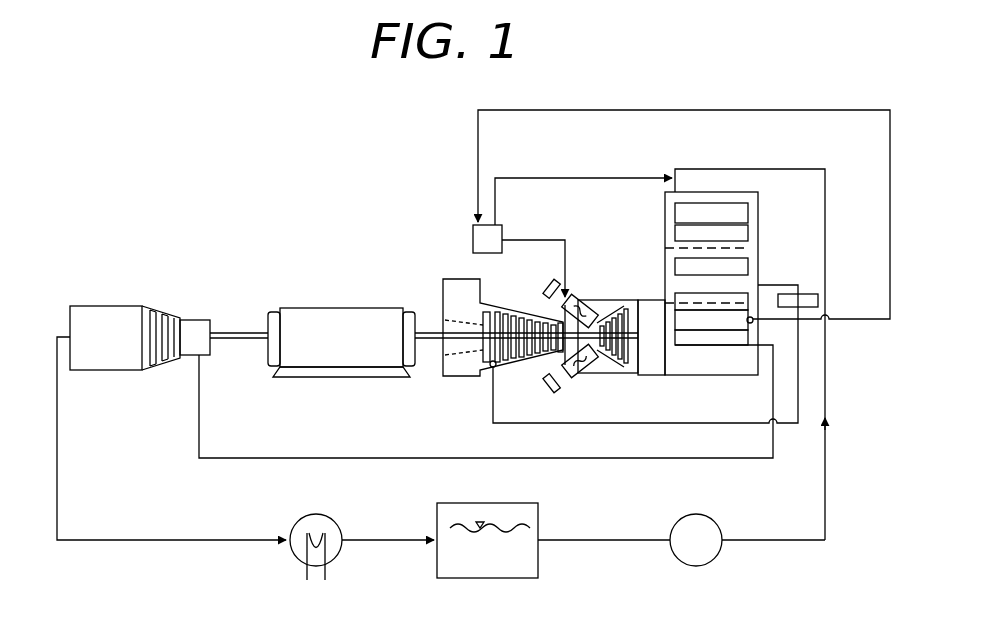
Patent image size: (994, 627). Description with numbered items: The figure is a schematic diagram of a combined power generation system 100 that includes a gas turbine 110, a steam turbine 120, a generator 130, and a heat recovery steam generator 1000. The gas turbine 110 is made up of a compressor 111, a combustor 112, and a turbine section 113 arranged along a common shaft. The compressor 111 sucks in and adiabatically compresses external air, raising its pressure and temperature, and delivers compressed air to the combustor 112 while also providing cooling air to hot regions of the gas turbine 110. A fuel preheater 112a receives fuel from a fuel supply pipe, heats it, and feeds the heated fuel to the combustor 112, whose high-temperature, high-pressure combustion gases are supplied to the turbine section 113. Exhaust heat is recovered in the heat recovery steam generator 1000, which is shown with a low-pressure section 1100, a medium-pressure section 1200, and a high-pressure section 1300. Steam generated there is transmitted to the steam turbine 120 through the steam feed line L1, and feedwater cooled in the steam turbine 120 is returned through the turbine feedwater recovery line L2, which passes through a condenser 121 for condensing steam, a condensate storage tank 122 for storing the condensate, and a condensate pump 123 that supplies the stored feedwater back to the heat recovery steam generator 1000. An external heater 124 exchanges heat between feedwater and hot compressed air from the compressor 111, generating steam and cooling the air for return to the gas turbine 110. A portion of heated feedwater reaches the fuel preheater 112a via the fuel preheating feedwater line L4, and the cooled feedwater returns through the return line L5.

The combined power generation system 100 is at (394, 124).
The gas turbine 110 is at (554, 325).
The compressor 111 is at (523, 358).
The combustor 112 is at (587, 367).
The fuel preheater 112a is at (468, 240).
The turbine section 113 is at (640, 350).
The steam turbine 120 is at (102, 318).
The condenser 121 is at (296, 552).
The condensate storage tank 122 is at (468, 578).
The condensate pump 123 is at (690, 566).
The external heater 124 is at (818, 301).
The generator 130 is at (301, 318).
The heat recovery steam generator 1000 is at (687, 331).
The low-pressure section 1100 is at (747, 233).
The medium-pressure section 1200 is at (737, 278).
The high-pressure section 1300 is at (739, 336).
The steam feed line L1 is at (365, 458).
The turbine feedwater recovery line L2 is at (157, 540).
The fuel preheating feedwater line L4 is at (617, 110).
The return line L5 is at (556, 178).